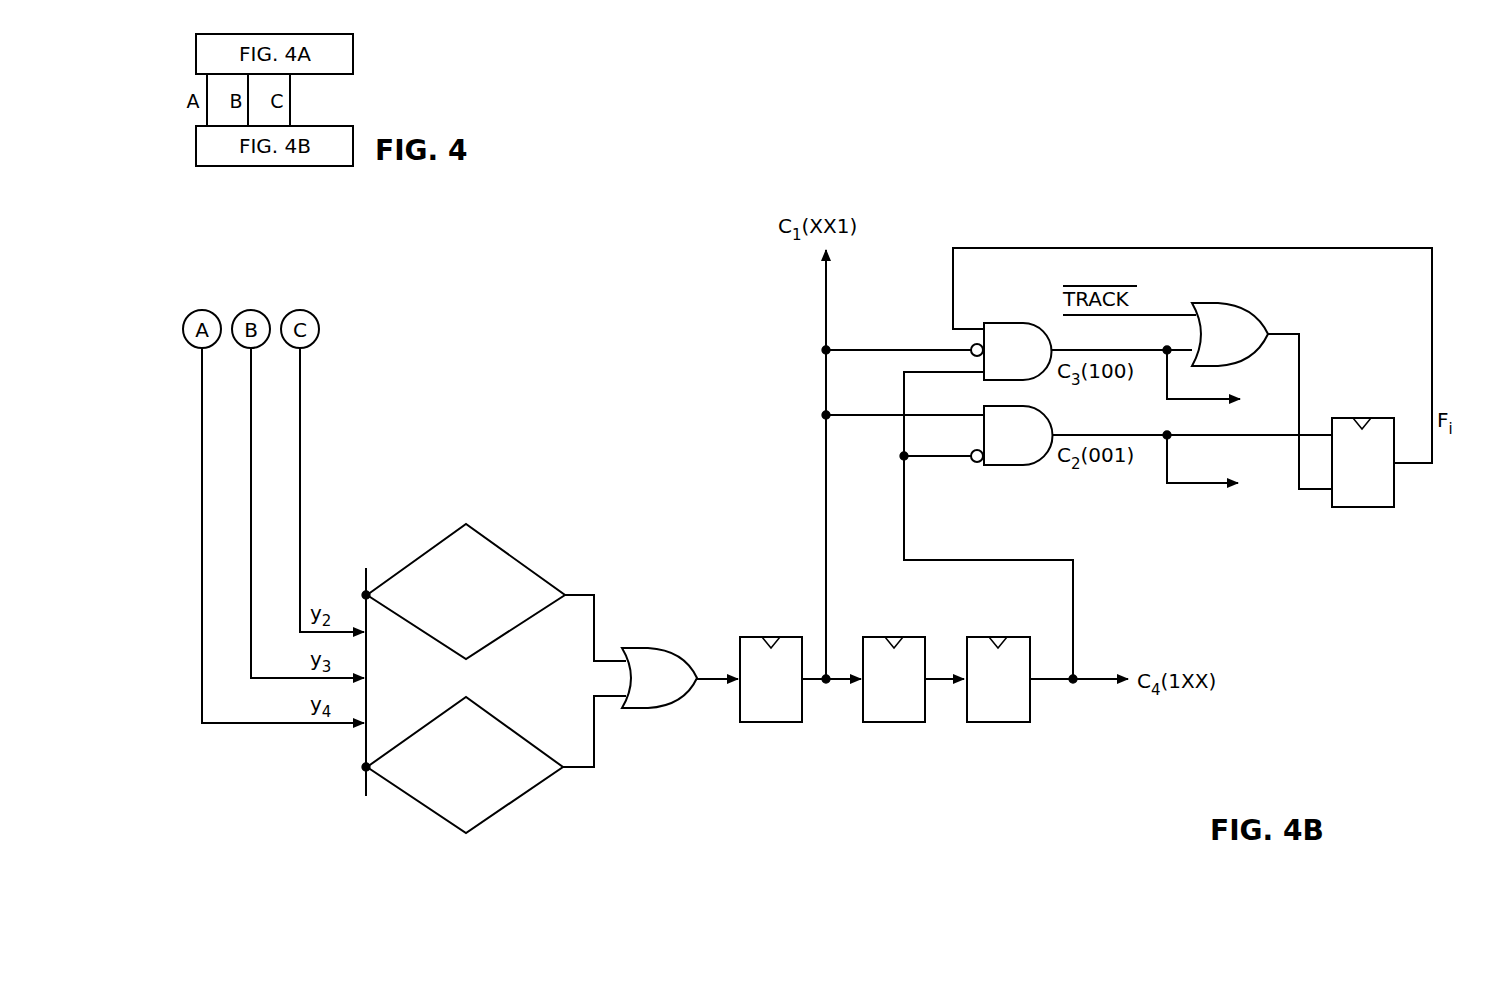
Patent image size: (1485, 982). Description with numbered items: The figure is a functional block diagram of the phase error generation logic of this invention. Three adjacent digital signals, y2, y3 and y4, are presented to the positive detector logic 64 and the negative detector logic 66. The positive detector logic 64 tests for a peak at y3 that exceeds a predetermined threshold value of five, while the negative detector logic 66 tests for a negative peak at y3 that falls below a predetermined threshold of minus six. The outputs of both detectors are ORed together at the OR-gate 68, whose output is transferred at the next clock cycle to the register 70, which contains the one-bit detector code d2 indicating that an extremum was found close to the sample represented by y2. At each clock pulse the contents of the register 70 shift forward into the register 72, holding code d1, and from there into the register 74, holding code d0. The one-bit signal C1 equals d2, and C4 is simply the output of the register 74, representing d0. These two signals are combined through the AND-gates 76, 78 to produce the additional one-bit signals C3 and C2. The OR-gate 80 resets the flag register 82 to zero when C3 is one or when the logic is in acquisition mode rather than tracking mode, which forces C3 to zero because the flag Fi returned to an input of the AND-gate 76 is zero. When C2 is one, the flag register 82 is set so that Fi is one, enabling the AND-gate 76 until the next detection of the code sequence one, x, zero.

The positive detector logic 64 is at (505, 548).
The negative detector logic 66 is at (528, 790).
The OR-gate 68 is at (661, 710).
The register 70 is at (784, 722).
The register 72 is at (900, 722).
The register 74 is at (1010, 722).
The AND-gate 76 is at (1016, 322).
The AND-gate 78 is at (1026, 465).
The OR-gate 80 is at (1248, 303).
The flag register 82 is at (1368, 507).